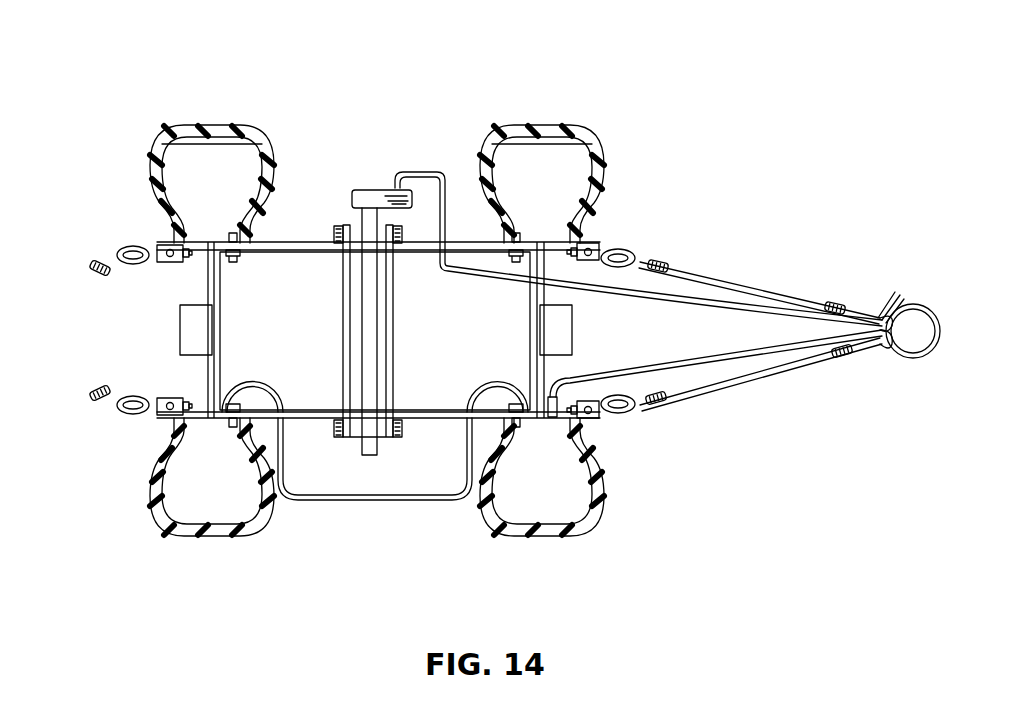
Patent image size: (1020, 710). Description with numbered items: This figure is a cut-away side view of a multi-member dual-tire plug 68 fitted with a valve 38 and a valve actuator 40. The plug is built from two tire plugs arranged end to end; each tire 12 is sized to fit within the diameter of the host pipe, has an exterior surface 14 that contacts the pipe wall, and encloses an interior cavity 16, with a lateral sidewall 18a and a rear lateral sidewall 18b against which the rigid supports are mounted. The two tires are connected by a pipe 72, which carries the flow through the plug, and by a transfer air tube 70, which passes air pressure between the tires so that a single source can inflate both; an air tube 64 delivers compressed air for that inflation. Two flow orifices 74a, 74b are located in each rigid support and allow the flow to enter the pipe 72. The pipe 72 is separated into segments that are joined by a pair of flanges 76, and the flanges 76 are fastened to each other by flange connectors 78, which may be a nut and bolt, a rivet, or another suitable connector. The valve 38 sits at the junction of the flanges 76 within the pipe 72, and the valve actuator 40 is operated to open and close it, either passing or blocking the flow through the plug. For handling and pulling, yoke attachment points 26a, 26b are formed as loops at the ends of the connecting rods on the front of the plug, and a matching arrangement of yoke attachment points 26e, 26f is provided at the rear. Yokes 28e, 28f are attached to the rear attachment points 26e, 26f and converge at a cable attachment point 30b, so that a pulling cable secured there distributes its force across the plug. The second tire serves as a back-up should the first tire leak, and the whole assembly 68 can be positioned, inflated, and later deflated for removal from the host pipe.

The dual-tire plug 68 is at (105, 96).
The exterior surface 14 is at (232, 128).
The interior cavity 16 is at (207, 163).
The tire 12 is at (188, 540).
The lateral sidewall 18a is at (160, 507).
The rear lateral sidewall 18b is at (600, 495).
The yoke attachment point 26a is at (168, 420).
The yoke attachment point 26b is at (163, 243).
The yoke attachment point 26e is at (594, 415).
The yoke attachment point 26f is at (600, 246).
The yoke 28e is at (723, 380).
The yoke 28f is at (753, 292).
The cable attachment point 30b is at (893, 362).
The valve 38 is at (372, 330).
The valve actuator 40 is at (352, 192).
The air tube 64 is at (441, 170).
The transfer air tube 70 is at (315, 497).
The pipe 72 is at (270, 243).
The flow orifice 74a is at (208, 333).
The flow orifice 74b is at (545, 334).
The flange 76 is at (383, 430).
The flange connector 78 is at (338, 435).